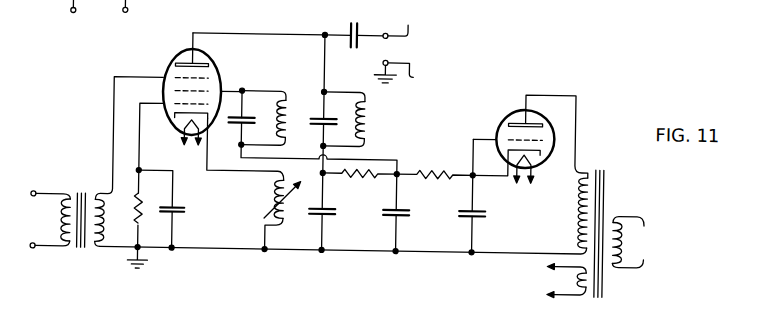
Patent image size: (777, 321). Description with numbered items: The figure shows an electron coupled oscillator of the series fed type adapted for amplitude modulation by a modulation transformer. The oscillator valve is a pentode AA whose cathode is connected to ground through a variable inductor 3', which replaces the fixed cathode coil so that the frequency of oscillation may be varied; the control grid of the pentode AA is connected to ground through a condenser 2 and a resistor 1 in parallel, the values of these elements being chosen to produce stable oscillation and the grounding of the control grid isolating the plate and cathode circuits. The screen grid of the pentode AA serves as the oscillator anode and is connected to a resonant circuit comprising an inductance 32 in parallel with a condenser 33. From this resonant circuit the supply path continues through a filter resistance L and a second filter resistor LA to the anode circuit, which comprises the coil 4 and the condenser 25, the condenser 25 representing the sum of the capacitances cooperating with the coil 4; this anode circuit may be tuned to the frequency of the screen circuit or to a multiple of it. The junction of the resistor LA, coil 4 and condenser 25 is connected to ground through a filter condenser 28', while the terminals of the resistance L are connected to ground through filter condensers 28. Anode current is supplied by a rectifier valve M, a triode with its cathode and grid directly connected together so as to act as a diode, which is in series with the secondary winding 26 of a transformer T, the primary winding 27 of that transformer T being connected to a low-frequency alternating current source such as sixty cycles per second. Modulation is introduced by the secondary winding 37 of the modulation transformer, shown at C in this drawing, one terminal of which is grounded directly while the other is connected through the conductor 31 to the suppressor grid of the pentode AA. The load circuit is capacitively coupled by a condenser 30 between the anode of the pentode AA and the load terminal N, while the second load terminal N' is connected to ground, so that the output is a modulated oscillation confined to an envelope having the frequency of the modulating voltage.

The condenser 30 is at (356, 22).
The conductor 31 is at (113, 133).
The condenser 33 is at (258, 114).
The inductance 32 is at (290, 115).
The condenser 25 is at (343, 113).
The coil 4 is at (371, 124).
The variable inductor 3' is at (254, 183).
The resistor 1 is at (135, 208).
The secondary winding 37 is at (102, 222).
The condenser 2 is at (188, 212).
The filter condenser 28' is at (338, 221).
The filter condenser 28 is at (422, 213).
The secondary winding 26 is at (582, 203).
The primary winding 27 is at (639, 243).
The pentode AA is at (166, 62).
The rectifier valve M is at (503, 114).
The terminal of the load circuit N is at (405, 25).
The second terminal of the load circuit N' is at (404, 74).
The transformer T is at (604, 218).
The second filter resistor LA is at (369, 179).
The filter resistor L is at (432, 186).
The input transformer C is at (81, 234).